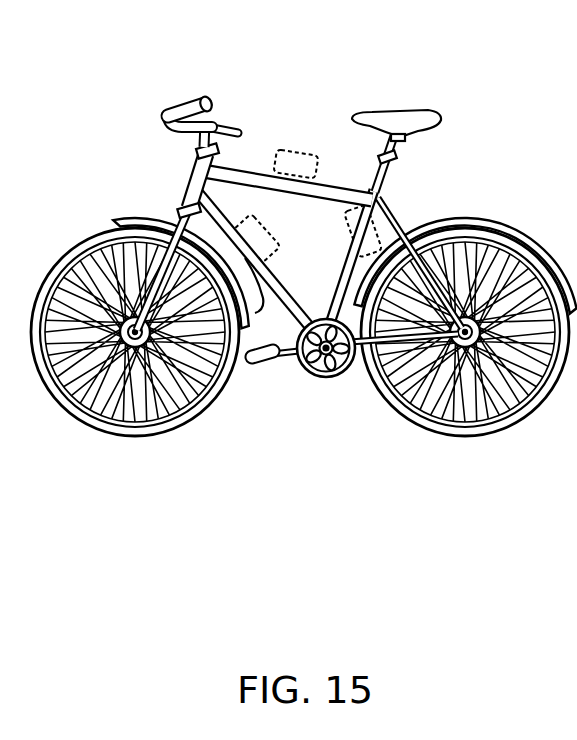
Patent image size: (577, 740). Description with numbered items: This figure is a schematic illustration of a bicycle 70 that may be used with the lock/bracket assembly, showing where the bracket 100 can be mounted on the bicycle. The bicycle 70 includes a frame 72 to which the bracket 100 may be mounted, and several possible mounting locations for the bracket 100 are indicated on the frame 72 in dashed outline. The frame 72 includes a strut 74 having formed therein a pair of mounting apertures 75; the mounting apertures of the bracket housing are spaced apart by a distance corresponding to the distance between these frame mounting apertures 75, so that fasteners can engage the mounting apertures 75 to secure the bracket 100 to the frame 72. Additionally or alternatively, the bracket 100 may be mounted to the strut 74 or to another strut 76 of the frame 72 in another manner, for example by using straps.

The bicycle 70 is at (240, 58).
The frame 72 is at (392, 165).
The strut 74 is at (282, 283).
The mounting apertures 75 is at (193, 276).
The strut 76 is at (240, 164).
The bracket 100 is at (302, 150).